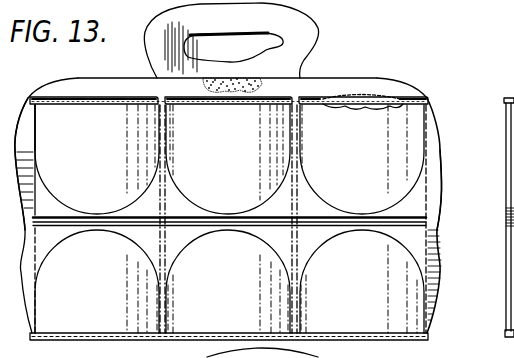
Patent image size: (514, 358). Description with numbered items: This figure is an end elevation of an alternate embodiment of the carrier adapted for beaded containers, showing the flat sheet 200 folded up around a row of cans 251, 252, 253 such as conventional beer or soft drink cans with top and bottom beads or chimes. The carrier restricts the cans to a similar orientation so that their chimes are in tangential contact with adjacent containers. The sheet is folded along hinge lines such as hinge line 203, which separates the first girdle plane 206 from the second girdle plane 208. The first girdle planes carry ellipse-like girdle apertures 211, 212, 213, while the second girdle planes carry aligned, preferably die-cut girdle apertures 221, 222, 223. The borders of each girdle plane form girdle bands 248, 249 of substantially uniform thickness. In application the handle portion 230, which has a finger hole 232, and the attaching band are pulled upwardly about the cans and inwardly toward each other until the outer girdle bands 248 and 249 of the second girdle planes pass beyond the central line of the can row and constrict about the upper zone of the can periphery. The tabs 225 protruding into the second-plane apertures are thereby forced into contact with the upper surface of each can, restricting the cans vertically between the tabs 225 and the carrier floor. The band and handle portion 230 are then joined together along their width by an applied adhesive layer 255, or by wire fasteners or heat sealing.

The handle portion 230 is at (214, 40).
The finger hole 232 is at (283, 42).
The applied adhesive layer 255 is at (240, 50).
The can 253 is at (66, 125).
The flat sheet 200 is at (321, 92).
The tab 225 is at (373, 99).
The girdle band 249 is at (30, 163).
The girdle band 248 is at (433, 142).
The second girdle plane 208 is at (432, 172).
The first girdle plane 206 is at (433, 258).
The hinge line 203 is at (407, 218).
The girdle aperture 223 is at (138, 184).
The girdle aperture 222 is at (272, 190).
The girdle aperture 221 is at (328, 202).
The can 252 is at (258, 149).
The can 251 is at (384, 151).
The girdle aperture 213 is at (68, 240).
The girdle aperture 212 is at (250, 237).
The girdle aperture 211 is at (383, 236).